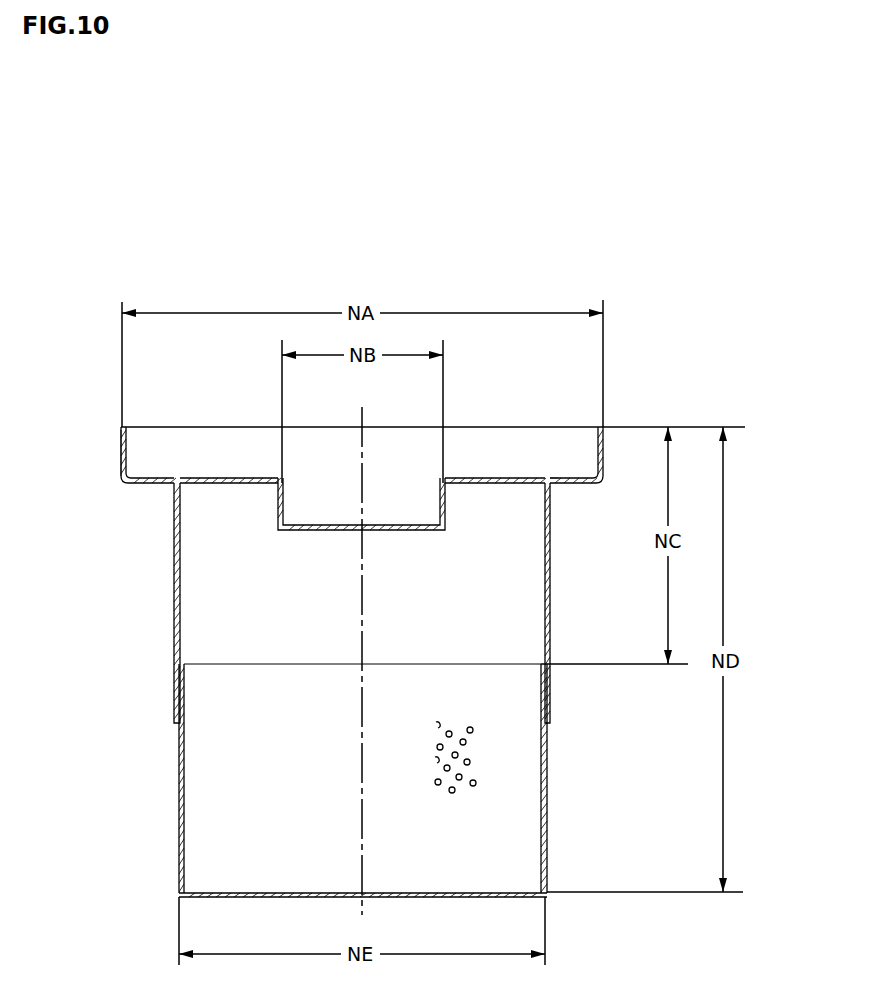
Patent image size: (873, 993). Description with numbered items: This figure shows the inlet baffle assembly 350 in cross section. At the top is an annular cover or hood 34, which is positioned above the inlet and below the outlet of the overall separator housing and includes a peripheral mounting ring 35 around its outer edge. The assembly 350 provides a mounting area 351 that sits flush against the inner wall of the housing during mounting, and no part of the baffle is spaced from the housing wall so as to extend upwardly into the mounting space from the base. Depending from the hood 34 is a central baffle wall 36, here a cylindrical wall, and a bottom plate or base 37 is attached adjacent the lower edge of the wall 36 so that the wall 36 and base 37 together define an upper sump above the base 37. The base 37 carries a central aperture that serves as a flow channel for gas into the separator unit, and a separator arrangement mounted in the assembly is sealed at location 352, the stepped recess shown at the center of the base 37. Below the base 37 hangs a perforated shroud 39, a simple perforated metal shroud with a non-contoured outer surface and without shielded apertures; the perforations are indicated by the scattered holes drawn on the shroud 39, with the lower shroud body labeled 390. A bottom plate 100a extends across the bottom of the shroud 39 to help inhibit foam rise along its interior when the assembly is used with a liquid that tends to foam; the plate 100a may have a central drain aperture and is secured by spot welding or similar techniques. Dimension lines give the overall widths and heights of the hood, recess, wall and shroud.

The peripheral mounting ring 35 is at (604, 452).
The mounting area 351 is at (120, 443).
The seal location 352 is at (300, 518).
The bottom plate or base 37 is at (487, 481).
The annular cover or hood 34 is at (568, 486).
The depending central baffle wall 36 is at (550, 572).
The inlet baffle assembly 350 is at (416, 603).
The perforated shroud 39 is at (547, 745).
The lower body portion 390 is at (402, 804).
The bottom plate 100a is at (249, 897).